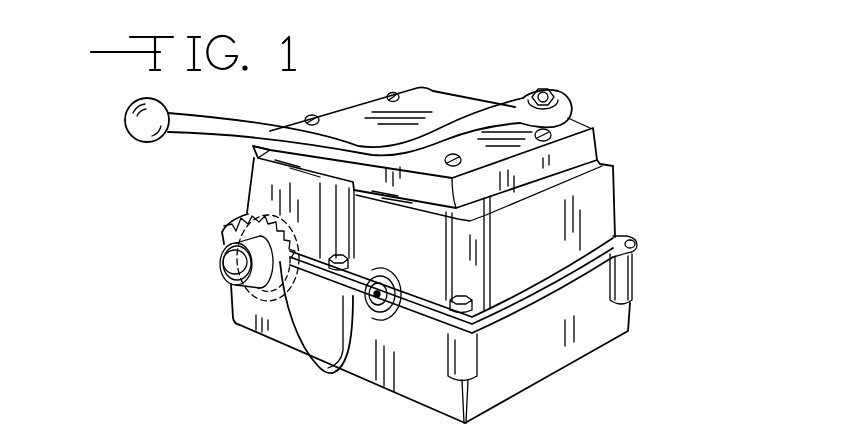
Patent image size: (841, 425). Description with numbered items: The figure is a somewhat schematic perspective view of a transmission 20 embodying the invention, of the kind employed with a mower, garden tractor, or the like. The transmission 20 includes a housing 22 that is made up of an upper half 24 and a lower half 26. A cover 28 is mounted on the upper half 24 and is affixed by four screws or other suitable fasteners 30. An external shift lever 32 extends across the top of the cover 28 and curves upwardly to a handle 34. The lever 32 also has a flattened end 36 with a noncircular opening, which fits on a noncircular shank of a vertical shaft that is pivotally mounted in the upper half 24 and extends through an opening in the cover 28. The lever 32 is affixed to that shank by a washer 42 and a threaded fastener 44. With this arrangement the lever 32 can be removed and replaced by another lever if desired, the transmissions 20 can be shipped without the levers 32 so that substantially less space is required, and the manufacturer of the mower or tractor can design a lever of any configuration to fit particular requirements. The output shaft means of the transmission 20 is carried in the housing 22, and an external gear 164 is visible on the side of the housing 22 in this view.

The transmission 20 is at (688, 286).
The housing 22 is at (641, 249).
The upper half 24 is at (620, 203).
The lower half 26 is at (628, 333).
The cover 28 is at (598, 143).
The screws or other suitable fasteners 30 is at (393, 97).
The external shift lever 32 is at (448, 123).
The handle 34 is at (125, 119).
The flattened end 36 is at (560, 102).
The washer 42 is at (556, 94).
The threaded fastener 44 is at (548, 93).
The gear 164 is at (230, 233).